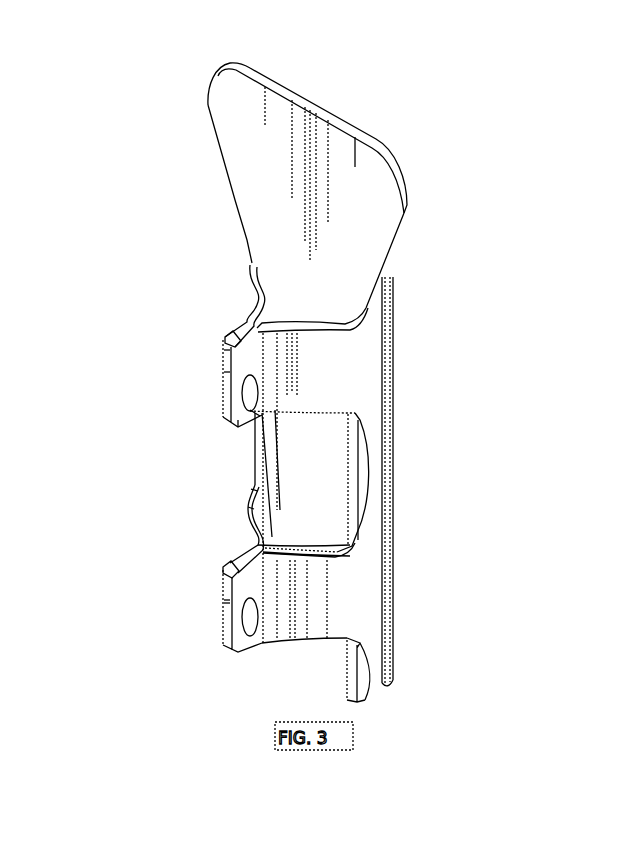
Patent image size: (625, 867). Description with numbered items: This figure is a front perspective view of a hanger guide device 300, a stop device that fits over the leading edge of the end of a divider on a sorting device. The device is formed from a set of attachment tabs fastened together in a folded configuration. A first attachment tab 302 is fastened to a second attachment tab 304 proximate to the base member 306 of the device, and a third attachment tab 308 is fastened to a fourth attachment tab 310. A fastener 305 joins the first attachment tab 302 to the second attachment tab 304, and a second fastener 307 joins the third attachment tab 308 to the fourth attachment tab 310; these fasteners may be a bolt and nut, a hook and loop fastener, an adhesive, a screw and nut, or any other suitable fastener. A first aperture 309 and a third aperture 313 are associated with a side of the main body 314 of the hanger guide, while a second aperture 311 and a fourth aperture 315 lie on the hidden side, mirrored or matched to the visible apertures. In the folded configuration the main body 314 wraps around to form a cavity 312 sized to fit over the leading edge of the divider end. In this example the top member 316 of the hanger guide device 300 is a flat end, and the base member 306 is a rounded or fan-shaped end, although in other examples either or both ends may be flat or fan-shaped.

The hanger guide device 300 is at (327, 37).
The first attachment tab 302 is at (260, 441).
The second attachment tab 304 is at (223, 338).
The fastener 305 is at (223, 372).
The base member 306 is at (310, 173).
The second fastener 307 is at (223, 602).
The third attachment tab 308 is at (286, 598).
The first aperture 309 is at (245, 398).
The fourth attachment tab 310 is at (223, 566).
The second aperture 311 is at (223, 352).
The cavity 312 is at (297, 415).
The third aperture 313 is at (245, 628).
The main body 314 is at (382, 395).
The fourth aperture 315 is at (228, 600).
The top member 316 is at (382, 685).